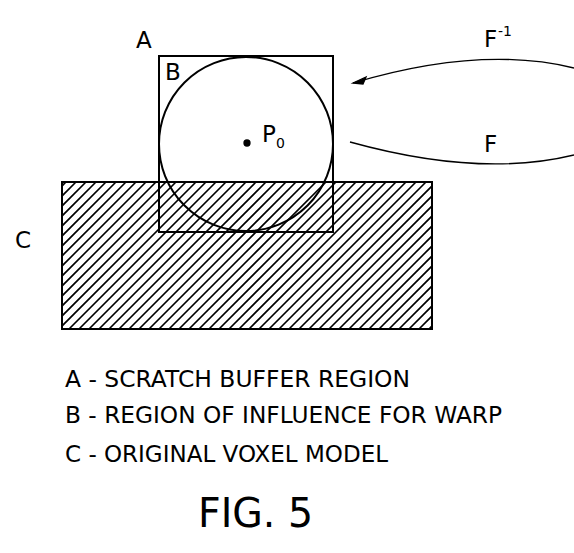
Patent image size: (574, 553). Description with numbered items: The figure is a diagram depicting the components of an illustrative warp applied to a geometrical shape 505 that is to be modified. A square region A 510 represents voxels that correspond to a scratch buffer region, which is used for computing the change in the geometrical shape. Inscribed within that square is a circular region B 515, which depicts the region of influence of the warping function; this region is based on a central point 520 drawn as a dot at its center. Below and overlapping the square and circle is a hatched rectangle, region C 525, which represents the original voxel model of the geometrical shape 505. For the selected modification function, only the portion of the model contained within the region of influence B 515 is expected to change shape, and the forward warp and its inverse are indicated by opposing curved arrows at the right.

The geometrical shape 505 is at (432, 266).
The region A 510 is at (288, 56).
The region B 515 is at (204, 66).
The central point P0 520 is at (244, 141).
The region C 525 is at (62, 273).